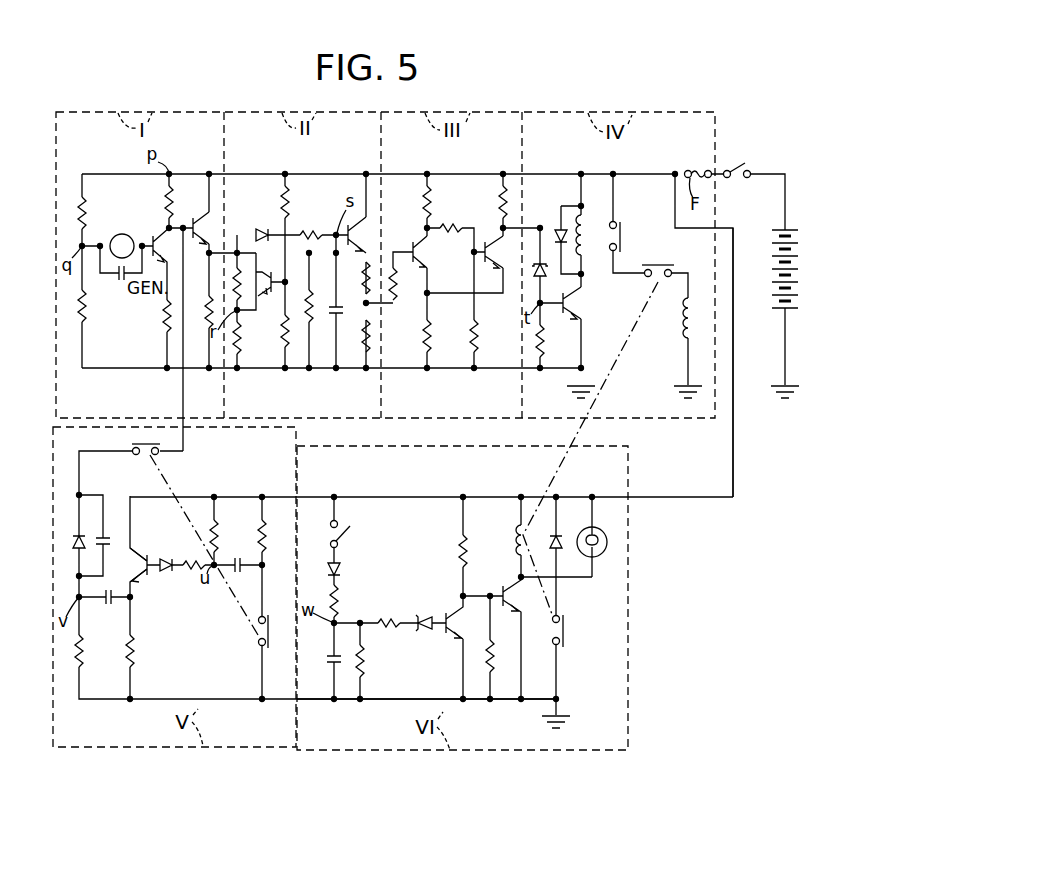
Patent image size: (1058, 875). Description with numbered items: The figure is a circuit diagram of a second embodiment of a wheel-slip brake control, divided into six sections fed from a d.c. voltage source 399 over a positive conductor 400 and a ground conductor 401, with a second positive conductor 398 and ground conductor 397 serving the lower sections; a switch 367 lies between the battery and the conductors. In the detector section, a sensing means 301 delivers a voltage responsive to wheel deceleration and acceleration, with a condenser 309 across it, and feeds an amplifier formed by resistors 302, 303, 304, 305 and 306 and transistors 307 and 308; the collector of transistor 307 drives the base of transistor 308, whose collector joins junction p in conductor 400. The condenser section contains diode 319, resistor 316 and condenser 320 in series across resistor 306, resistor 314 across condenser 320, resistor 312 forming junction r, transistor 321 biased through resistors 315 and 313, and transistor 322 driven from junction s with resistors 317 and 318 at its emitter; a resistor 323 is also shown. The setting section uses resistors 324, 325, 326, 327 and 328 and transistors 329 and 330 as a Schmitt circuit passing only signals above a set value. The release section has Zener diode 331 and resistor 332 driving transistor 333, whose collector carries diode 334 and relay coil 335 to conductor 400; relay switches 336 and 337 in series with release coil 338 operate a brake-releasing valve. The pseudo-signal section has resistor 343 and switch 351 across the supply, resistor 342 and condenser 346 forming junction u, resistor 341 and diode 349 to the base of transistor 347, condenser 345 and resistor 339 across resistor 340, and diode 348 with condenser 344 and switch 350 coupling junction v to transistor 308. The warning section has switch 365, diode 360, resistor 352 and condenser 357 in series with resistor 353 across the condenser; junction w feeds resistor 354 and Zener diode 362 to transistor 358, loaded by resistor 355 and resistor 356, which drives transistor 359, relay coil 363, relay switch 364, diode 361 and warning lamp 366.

The sensing means 301 is at (120, 234).
The resistor 302 is at (82, 197).
The resistor 303 is at (86, 320).
The resistor 304 is at (165, 200).
The resistor 305 is at (162, 310).
The resistor 306 is at (208, 300).
The transistor 307 is at (153, 238).
The transistor 308 is at (207, 224).
The condenser 309 is at (121, 280).
The resistor 312 is at (240, 340).
The resistor 313 is at (288, 348).
The resistor 314 is at (312, 303).
The resistor 315 is at (289, 208).
The resistor 316 is at (310, 234).
The resistor 317 is at (364, 280).
The resistor 318 is at (370, 336).
The diode 319 is at (262, 229).
The condenser 320 is at (343, 310).
The transistor 321 is at (268, 296).
The transistor 322 is at (362, 230).
The resistor 323 is at (393, 285).
The resistor 324 is at (432, 204).
The resistor 325 is at (431, 336).
The resistor 326 is at (452, 228).
The resistor 327 is at (474, 331).
The resistor 328 is at (510, 205).
The transistor 329 is at (425, 258).
The transistor 330 is at (490, 230).
The Zener diode 331 is at (544, 268).
The resistor 332 is at (544, 340).
The transistor 333 is at (578, 306).
The diode 334 is at (556, 232).
The relay coil 335 is at (586, 228).
The relay switch 336 is at (621, 230).
The relay switch 337 is at (655, 280).
The release coil 338 is at (684, 320).
The resistor 339 is at (84, 650).
The resistor 340 is at (135, 650).
The resistor 341 is at (196, 584).
The resistor 342 is at (212, 526).
The resistor 343 is at (266, 530).
The condenser 344 is at (108, 536).
The condenser 345 is at (109, 603).
The condenser 346 is at (237, 557).
The transistor 347 is at (143, 565).
The diode 348 is at (74, 545).
The diode 349 is at (166, 572).
The switch 350 is at (140, 444).
The switch 351 is at (269, 645).
The resistor 352 is at (340, 600).
The resistor 353 is at (365, 658).
The resistor 354 is at (388, 620).
The resistor 355 is at (458, 552).
The resistor 356 is at (494, 660).
The condenser 357 is at (327, 656).
The transistor 358 is at (452, 636).
The transistor 359 is at (521, 608).
The diode 360 is at (327, 568).
The diode 361 is at (558, 537).
The Zener diode 362 is at (425, 629).
The relay coil 363 is at (516, 545).
The relay switch 364 is at (566, 633).
The switch 365 is at (350, 537).
The warning lamp 366 is at (602, 553).
The switch 367 is at (738, 167).
The ground conductor 397 is at (426, 717).
The positive conductor 398 is at (640, 500).
The d.c. voltage source 399 is at (799, 270).
The conductor 400 is at (305, 174).
The conductor 401 is at (88, 368).